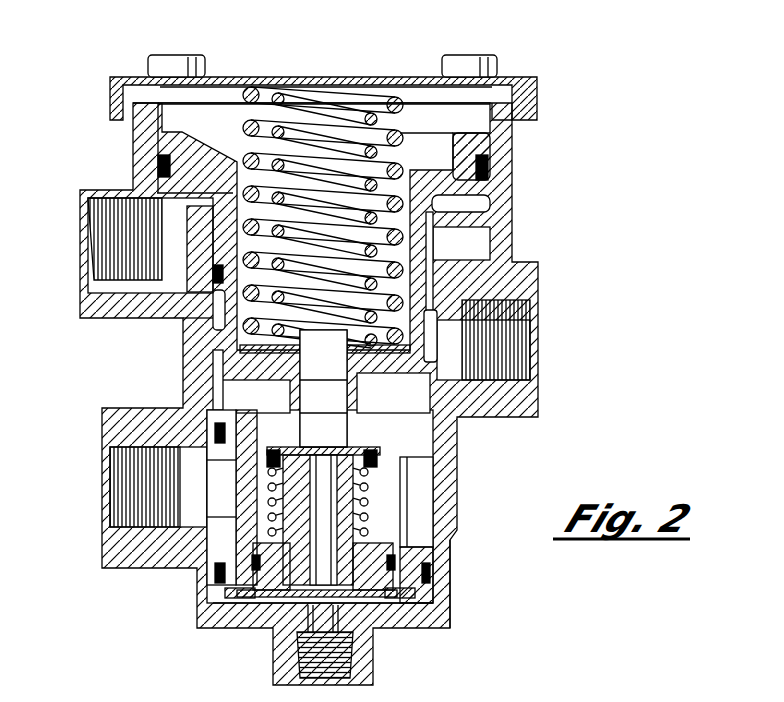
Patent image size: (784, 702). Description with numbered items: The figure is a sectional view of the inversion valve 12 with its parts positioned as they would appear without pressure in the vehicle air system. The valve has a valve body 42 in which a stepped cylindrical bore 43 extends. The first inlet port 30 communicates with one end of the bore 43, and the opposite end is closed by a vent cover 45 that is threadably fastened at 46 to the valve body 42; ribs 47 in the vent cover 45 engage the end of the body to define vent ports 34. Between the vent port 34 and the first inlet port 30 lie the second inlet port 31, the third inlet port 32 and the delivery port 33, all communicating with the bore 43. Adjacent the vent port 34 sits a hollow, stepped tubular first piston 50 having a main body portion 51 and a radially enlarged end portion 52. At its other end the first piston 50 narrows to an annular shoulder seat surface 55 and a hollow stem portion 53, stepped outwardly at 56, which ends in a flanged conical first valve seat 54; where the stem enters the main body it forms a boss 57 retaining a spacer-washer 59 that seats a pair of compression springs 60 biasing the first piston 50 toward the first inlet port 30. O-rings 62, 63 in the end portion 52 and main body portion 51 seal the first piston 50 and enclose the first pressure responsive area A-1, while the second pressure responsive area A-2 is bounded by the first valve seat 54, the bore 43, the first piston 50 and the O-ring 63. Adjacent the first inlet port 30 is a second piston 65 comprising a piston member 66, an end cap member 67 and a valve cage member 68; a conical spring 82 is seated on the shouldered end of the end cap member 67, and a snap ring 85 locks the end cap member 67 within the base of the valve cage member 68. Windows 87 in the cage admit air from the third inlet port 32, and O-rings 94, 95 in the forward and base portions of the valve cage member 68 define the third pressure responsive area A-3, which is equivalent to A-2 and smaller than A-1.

The inversion valve 12 is at (456, 592).
The first inlet port 30 is at (345, 677).
The second inlet port 31 is at (82, 232).
The third inlet port 32 is at (105, 497).
The delivery port 33 is at (530, 335).
The vent port 34 is at (157, 158).
The valve body 42 is at (510, 182).
The stepped cylindrical bore 43 is at (190, 325).
The vent cover 45 is at (311, 77).
The threaded fastening 46 is at (498, 58).
The ribs 47 is at (165, 91).
The first piston 50 is at (430, 128).
The main body portion 51 is at (200, 226).
The end portion 52 is at (470, 147).
The hollow stem portion 53 is at (350, 388).
The first valve seat 54 is at (332, 450).
The annular shoulder seat surface 55 is at (440, 378).
The radially outward step 56 is at (280, 405).
The boss 57 is at (368, 330).
The spacer-washer 59 is at (278, 402).
The compression springs 60 is at (272, 94).
The O-ring 62 is at (162, 165).
The O-ring 63 is at (214, 272).
The second piston 65 is at (420, 545).
The piston member 66 is at (350, 510).
The end cap member 67 is at (374, 598).
The valve cage member 68 is at (240, 590).
The conical spring 82 is at (217, 556).
The snap ring 85 is at (240, 598).
The windows 87 is at (402, 484).
The O-ring 94 is at (207, 470).
The O-ring 95 is at (250, 612).
The first pressure responsive area A-1 is at (433, 243).
The second pressure responsive area A-2 is at (425, 443).
The third pressure responsive area A-3 is at (285, 392).